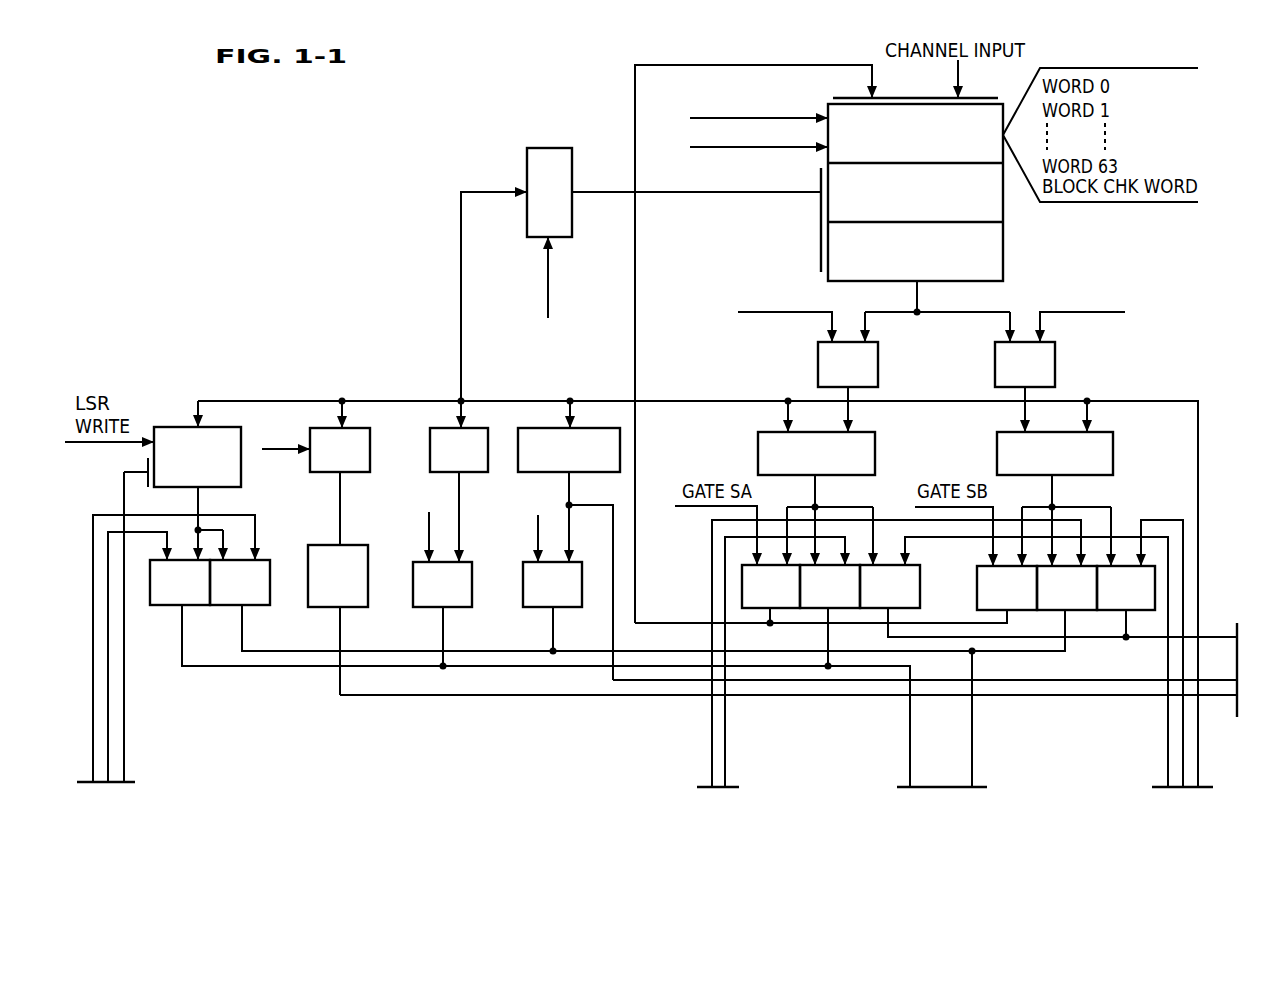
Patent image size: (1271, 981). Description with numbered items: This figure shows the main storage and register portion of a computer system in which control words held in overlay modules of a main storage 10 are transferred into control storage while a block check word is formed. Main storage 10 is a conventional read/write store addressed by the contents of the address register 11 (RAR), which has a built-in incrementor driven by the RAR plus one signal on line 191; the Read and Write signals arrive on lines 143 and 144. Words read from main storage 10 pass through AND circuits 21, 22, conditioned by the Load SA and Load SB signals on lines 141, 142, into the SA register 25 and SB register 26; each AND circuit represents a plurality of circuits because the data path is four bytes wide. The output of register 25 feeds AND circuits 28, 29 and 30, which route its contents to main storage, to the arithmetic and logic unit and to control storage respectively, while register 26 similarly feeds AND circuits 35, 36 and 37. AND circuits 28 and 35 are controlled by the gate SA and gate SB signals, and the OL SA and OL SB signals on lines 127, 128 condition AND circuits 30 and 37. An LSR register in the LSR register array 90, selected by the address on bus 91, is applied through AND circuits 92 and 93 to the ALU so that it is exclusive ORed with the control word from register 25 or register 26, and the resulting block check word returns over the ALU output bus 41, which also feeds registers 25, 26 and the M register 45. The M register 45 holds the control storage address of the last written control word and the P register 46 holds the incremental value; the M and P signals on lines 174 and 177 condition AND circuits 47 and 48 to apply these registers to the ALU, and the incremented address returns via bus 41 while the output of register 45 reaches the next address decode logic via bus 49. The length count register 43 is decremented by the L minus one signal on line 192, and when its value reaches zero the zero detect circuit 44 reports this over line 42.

The main storage 10 is at (1003, 237).
The address register 11 is at (548, 148).
The RAR +1 signal line 191 is at (548, 275).
The Read signal line 143 is at (700, 117).
The Write signal line 144 is at (700, 147).
The Load SA signal line 141 is at (772, 312).
The Load SB signal line 142 is at (1097, 312).
The AND circuit 21 is at (875, 381).
The AND circuit 22 is at (1052, 381).
The ALU output bus 41 is at (1176, 401).
The LSR register array 90 is at (166, 427).
The LSR address bus 91 is at (124, 724).
The AND circuit 92 is at (265, 600).
The AND circuit 93 is at (205, 600).
The L−1 signal line 192 is at (284, 449).
The length count register 43 is at (365, 472).
The zero detect circuit 44 is at (326, 545).
The P register 46 is at (480, 472).
The M register 45 is at (525, 472).
The P signal line 177 is at (429, 535).
The M signal line 174 is at (538, 535).
The AND circuit 48 is at (468, 601).
The AND circuit 47 is at (578, 601).
The SA register 25 is at (875, 450).
The SB register 26 is at (1113, 450).
The AND circuit 28 is at (795, 604).
The AND circuit 29 is at (853, 604).
The AND circuit 30 is at (915, 604).
The AND circuit 35 is at (1032, 605).
The AND circuit 36 is at (1092, 605).
The AND circuit 37 is at (1152, 605).
The OL SB signal line 128 is at (1163, 520).
The M register output bus 49 is at (1100, 680).
The zero detect output line 42 is at (1101, 697).
The OL SA signal line 127 is at (1168, 772).